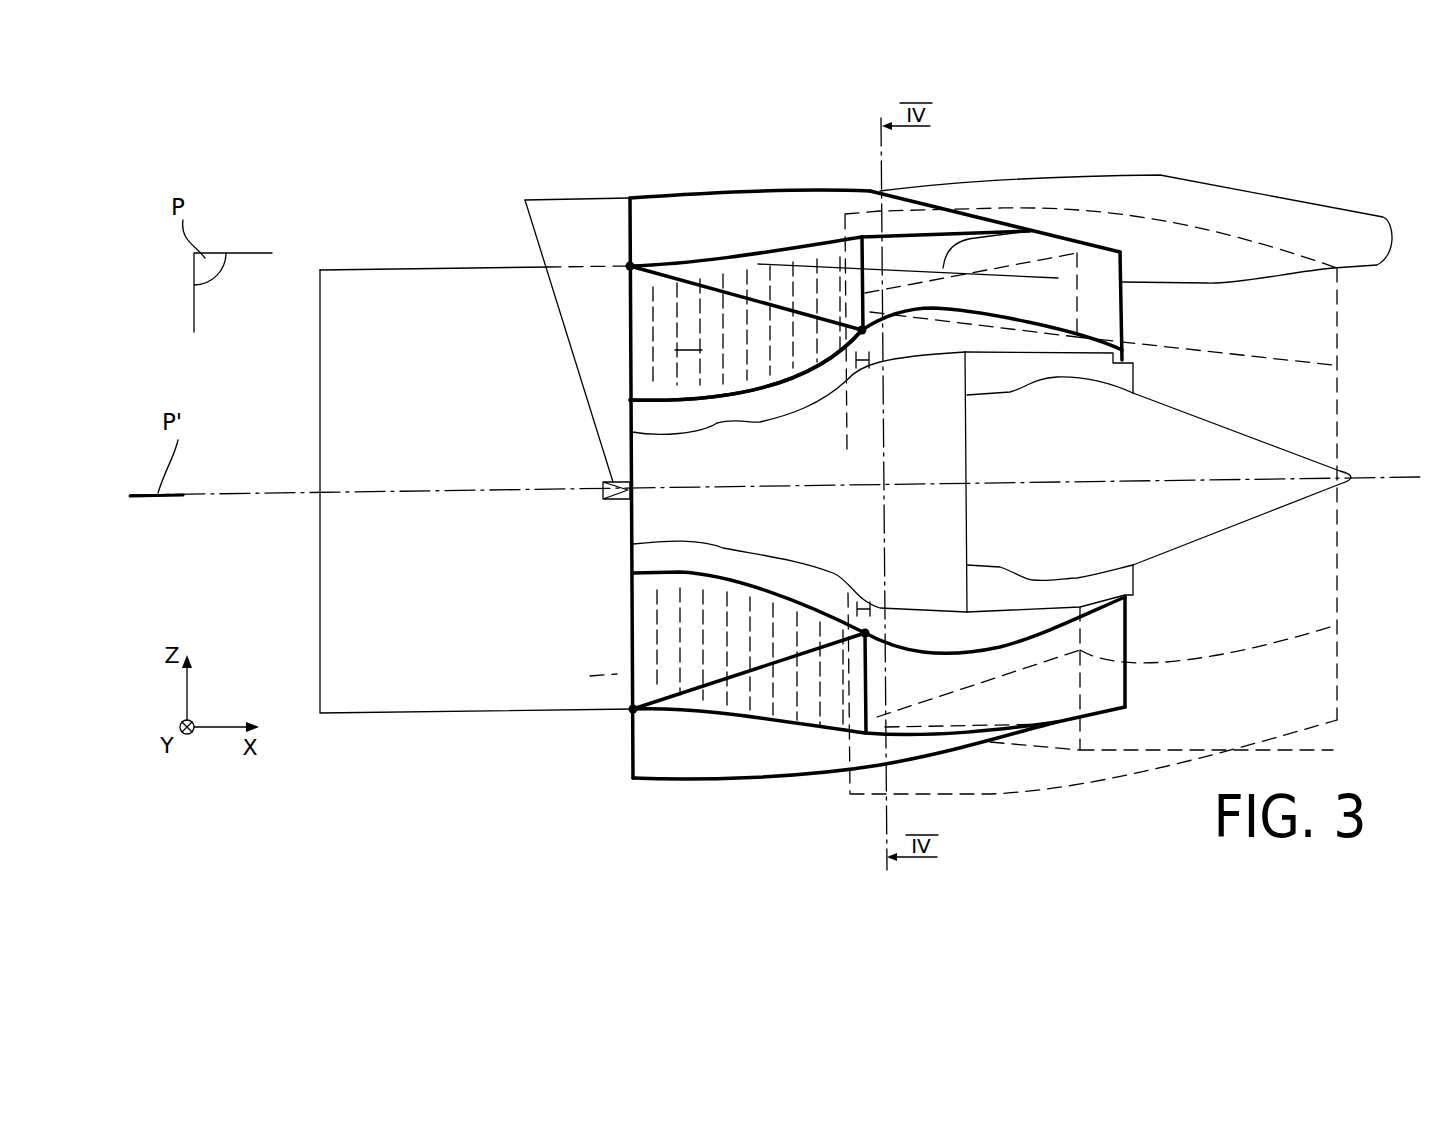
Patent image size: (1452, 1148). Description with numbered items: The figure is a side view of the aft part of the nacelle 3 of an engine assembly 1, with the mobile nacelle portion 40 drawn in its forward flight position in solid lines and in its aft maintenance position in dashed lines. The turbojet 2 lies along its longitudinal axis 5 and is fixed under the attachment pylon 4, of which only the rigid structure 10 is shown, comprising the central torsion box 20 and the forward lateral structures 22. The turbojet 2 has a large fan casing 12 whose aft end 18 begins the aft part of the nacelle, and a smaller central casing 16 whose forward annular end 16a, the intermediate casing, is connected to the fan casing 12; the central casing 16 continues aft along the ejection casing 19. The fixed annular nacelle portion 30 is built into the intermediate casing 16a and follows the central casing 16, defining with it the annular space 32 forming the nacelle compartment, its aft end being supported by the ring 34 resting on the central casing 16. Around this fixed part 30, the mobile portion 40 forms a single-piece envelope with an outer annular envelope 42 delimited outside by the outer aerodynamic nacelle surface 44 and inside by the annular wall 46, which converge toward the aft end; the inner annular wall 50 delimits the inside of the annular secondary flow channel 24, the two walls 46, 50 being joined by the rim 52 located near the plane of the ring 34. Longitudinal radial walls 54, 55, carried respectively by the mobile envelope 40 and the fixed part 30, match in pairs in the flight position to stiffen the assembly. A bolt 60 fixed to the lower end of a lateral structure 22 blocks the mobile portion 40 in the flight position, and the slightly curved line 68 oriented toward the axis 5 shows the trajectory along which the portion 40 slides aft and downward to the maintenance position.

The engine assembly 1 is at (378, 150).
The turbojet 2 is at (305, 418).
The nacelle 3 is at (648, 172).
The attachment pylon 4 is at (1140, 155).
The longitudinal axis 5 is at (1392, 477).
The rigid structure 10 is at (572, 193).
The fan casing 12 is at (345, 648).
The central casing 16 is at (730, 423).
The forward annular end of the central casing 16a is at (633, 557).
The aft end of the fan casing 18 is at (633, 680).
The ejection casing 19 is at (978, 324).
The central torsion box 20 is at (1270, 200).
The lateral structures 22 is at (573, 340).
The annular secondary flow channel 24 is at (702, 349).
The fixed annular nacelle portion 30 is at (793, 387).
The annular space 32 is at (687, 429).
The ring 34 is at (872, 363).
The mobile nacelle portion 40 is at (690, 783).
The outer annular envelope 42 is at (745, 196).
The outer aerodynamic nacelle surface 44 is at (890, 200).
The annular wall 46 is at (760, 250).
The annular wall 50 is at (1080, 323).
The rim 52 is at (865, 252).
The longitudinal radial walls 54 is at (788, 307).
The longitudinal radial walls 55 is at (697, 372).
The bolts 60 is at (610, 503).
The line 68 is at (1023, 230).